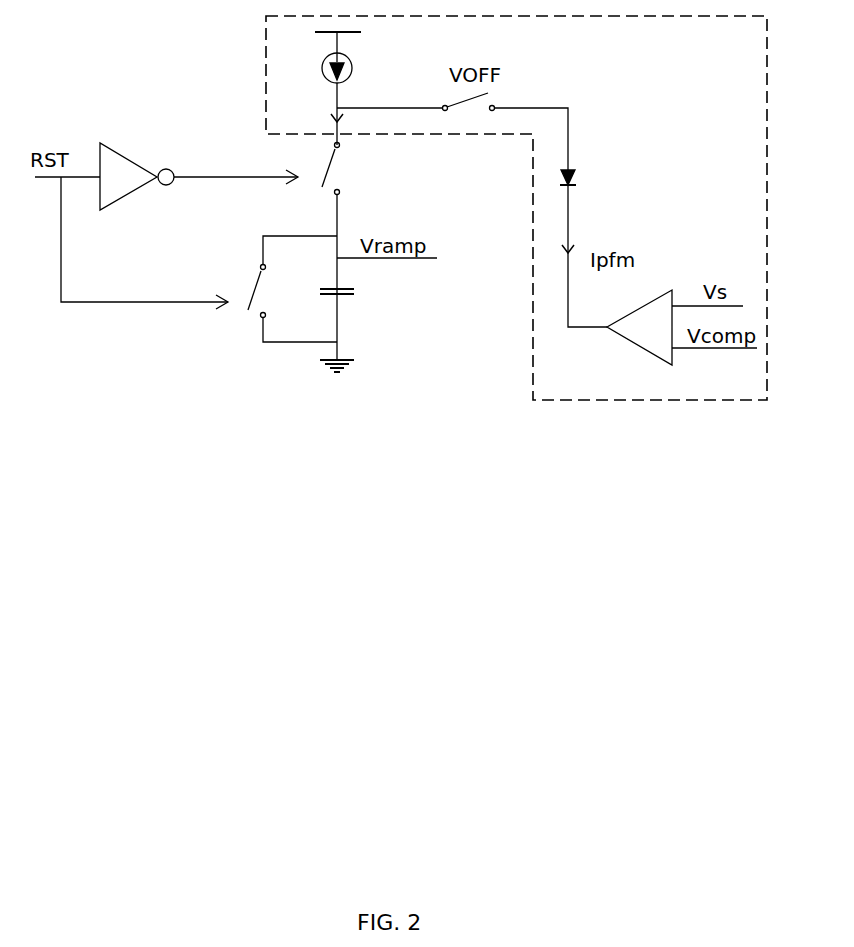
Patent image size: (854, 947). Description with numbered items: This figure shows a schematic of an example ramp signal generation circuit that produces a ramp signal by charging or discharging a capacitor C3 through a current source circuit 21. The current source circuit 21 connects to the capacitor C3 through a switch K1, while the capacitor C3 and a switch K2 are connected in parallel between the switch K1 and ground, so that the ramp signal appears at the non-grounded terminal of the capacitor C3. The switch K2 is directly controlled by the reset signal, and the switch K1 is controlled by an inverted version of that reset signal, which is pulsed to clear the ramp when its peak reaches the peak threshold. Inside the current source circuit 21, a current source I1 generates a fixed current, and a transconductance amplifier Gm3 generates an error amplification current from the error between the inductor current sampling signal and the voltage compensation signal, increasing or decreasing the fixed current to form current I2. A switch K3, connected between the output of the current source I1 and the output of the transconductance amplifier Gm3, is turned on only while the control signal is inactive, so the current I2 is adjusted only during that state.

The current source circuit 21 is at (533, 222).
The current source I1 is at (328, 57).
The current I2 is at (320, 125).
The switch K1 is at (347, 169).
The switch K2 is at (243, 287).
The switch K3 is at (469, 113).
The capacitor C3 is at (357, 304).
The transconductance amplifier Gm3 is at (639, 327).